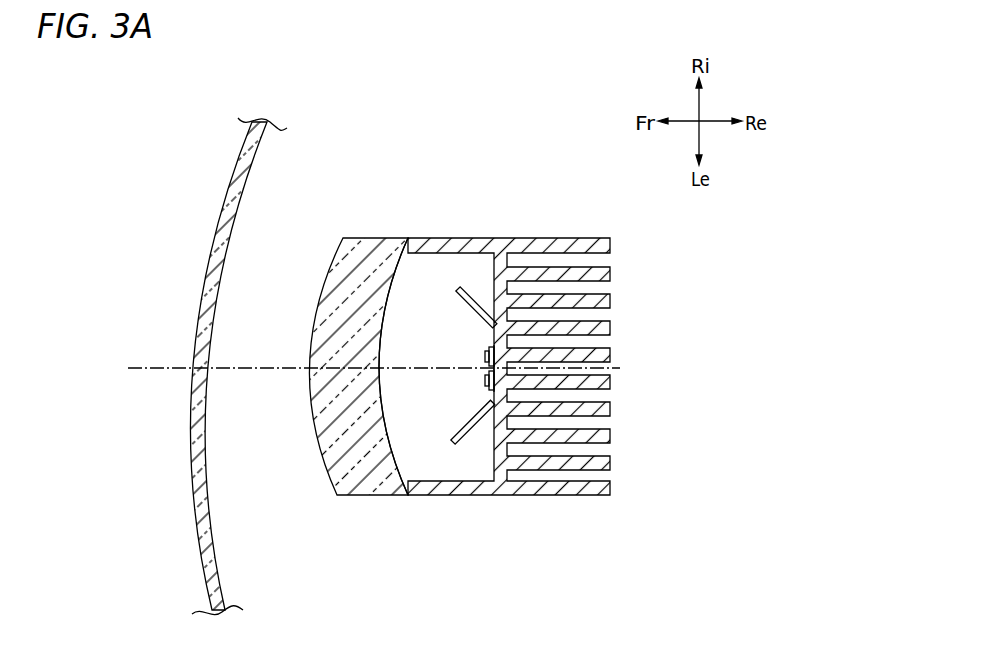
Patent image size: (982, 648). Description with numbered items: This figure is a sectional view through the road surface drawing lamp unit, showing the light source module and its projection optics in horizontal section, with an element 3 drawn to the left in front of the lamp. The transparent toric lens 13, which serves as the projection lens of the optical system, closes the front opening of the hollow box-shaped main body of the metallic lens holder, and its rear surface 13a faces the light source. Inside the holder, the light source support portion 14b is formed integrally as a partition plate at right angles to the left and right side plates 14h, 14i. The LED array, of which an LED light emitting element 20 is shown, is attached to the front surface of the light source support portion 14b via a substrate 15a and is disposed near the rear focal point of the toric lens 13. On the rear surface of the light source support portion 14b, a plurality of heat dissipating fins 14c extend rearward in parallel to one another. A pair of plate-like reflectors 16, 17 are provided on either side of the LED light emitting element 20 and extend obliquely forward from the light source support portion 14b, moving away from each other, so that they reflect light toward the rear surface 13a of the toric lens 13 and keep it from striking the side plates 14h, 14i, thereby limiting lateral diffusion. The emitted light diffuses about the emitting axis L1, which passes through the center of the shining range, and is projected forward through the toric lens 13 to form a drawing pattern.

The windshield 3 is at (203, 540).
The toric lens 13 is at (330, 462).
The rear surface of the toric lens 13a is at (382, 342).
The light source support portion 14b is at (510, 478).
The right side plate 14i is at (482, 242).
The left side plate 14h is at (455, 490).
The heat dissipating fins 14c is at (627, 239).
The substrate 15a is at (493, 380).
The reflector 16 is at (468, 432).
The reflector 17 is at (472, 300).
The LED light emitting element 20 is at (485, 355).
The emitting axis L1 is at (142, 360).